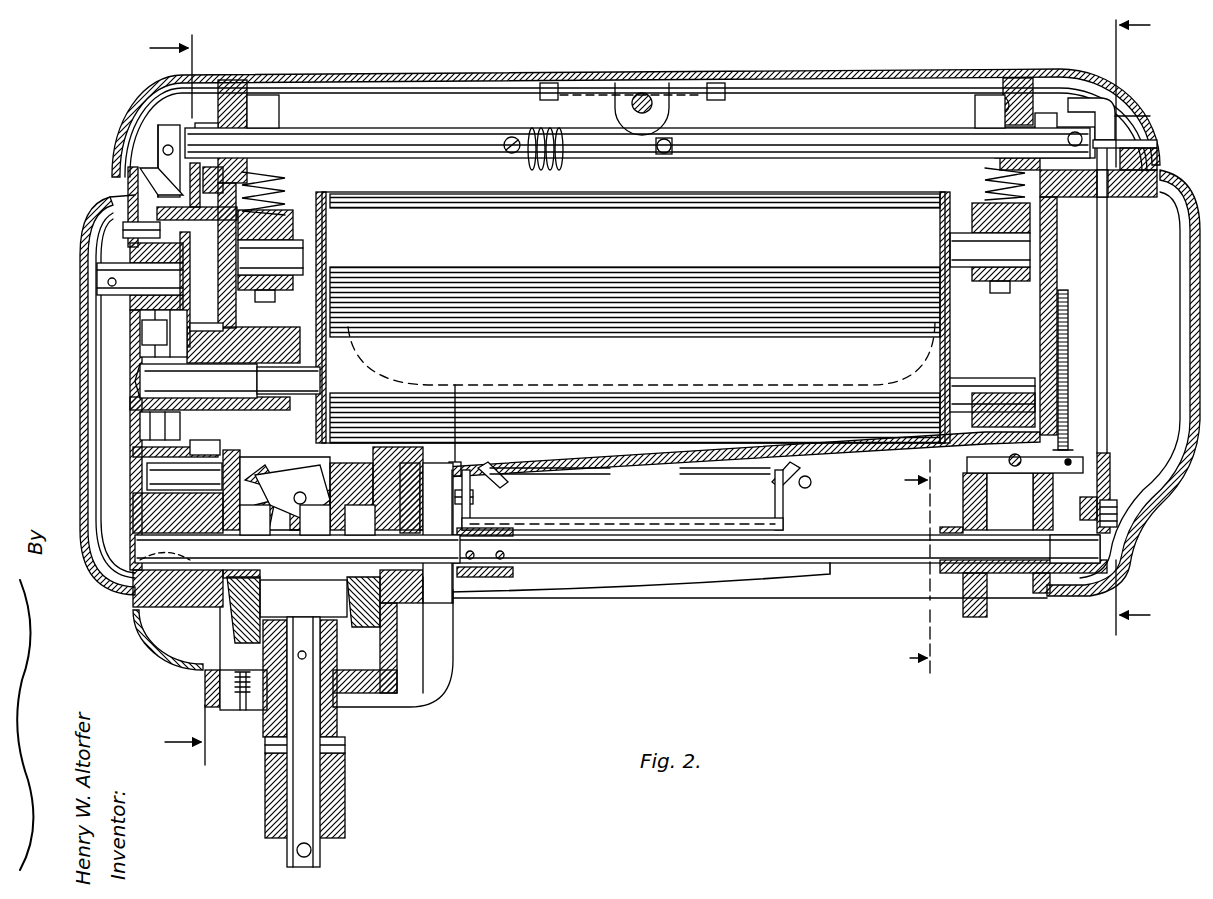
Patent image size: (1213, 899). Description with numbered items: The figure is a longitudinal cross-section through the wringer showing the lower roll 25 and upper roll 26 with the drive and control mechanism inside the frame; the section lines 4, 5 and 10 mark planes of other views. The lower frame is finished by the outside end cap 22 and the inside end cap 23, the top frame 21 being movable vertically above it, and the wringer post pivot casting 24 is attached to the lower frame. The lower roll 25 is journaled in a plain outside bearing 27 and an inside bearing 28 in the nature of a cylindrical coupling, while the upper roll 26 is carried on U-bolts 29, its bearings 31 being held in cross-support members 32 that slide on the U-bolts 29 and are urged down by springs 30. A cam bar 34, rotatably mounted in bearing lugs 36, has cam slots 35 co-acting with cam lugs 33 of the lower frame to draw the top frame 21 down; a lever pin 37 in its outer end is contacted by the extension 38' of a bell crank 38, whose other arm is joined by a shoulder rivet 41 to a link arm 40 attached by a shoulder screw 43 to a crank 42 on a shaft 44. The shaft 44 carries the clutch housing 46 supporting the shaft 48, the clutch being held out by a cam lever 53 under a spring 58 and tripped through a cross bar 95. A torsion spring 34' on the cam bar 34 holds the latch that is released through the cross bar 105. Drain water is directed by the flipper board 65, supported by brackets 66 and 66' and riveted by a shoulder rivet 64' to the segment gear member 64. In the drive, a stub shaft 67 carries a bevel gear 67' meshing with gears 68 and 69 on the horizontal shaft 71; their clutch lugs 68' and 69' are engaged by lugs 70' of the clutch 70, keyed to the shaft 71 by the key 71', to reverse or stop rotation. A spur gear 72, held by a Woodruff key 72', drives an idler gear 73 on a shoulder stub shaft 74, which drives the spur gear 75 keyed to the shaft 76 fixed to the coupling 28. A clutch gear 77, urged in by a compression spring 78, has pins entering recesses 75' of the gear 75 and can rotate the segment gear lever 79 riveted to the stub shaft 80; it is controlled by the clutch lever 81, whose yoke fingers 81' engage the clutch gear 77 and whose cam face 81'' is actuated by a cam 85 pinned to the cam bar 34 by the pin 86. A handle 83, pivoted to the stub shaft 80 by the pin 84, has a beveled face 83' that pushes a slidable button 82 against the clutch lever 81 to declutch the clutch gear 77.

The section line 4- 4 is at (1140, 324).
The section line 5- 5 is at (907, 567).
The section line 10- 10 is at (388, 728).
The top frame 21 is at (1132, 106).
The outside end cap 22 is at (1123, 383).
The inside end cap 23 is at (185, 670).
The wringer post pivot casting 24 is at (345, 778).
The lower roll 25 is at (644, 372).
The upper roll 26 is at (644, 249).
The outside bearing 27 is at (985, 400).
The inside bearing 28 is at (245, 390).
The U-bolts 29 is at (280, 128).
The springs 30 is at (288, 182).
The bearings 31 is at (303, 240).
The cross-support members 32 is at (295, 225).
The cam lugs 33 is at (207, 123).
The cam bar 34 is at (637, 128).
The torsion spring 34' is at (527, 135).
The cam slots 35 is at (195, 135).
The bearing lugs 36 is at (268, 102).
The lever pin 37 is at (1075, 130).
The bell crank member 38 is at (1159, 108).
The inwardly projecting extension 38' is at (1114, 96).
The link arm 40 is at (1108, 250).
The shoulder rivet 41 is at (1158, 144).
The crank member 42 is at (1085, 500).
The shoulder screw 43 is at (1110, 498).
The shaft 44 is at (1100, 545).
The clutch housing 46 is at (1023, 545).
The shaft 48 is at (870, 552).
The cam lever 53 is at (1010, 501).
The spring 58 is at (1075, 345).
The companion segment gear member 64 is at (720, 446).
The shoulder rivet 64' is at (489, 503).
The flipper board 65 is at (630, 518).
The bracket 66 is at (505, 465).
The companion bracket 66' is at (780, 465).
The stub shaft 67 is at (334, 742).
The bevel gear 67' is at (283, 721).
The mating gear 68 is at (243, 676).
The clutch lugs 68' is at (256, 533).
The mating gear 69 is at (385, 648).
The clutch lugs 69' is at (372, 533).
The clutch 70 is at (303, 610).
The lugs 70' is at (323, 533).
The horizontal shaft 71 is at (391, 577).
The key 71' is at (292, 492).
The spur gear 72 is at (176, 657).
The Woodruff key 72' is at (297, 549).
The idler gear 73 is at (215, 452).
The shoulder stub shaft 74 is at (165, 475).
The spur gear 75 is at (178, 321).
The recesses 75' is at (226, 325).
The shaft 76 is at (160, 380).
The clutch gear 77 is at (190, 448).
The compression spring 78 is at (140, 425).
The segment gear lever 79 is at (198, 289).
The stub-shaft 80 is at (82, 320).
The clutch lever 81 is at (149, 191).
The yoke fingers 81' is at (133, 329).
The cam face 81'' is at (115, 169).
The slidable button 82 is at (125, 238).
The handle 83 is at (83, 396).
The beveled face 83' is at (85, 208).
The pin 84 is at (108, 282).
The cam 85 is at (158, 128).
The pin 86 is at (163, 150).
The cross bar 95 is at (1080, 455).
The cross bar 105 is at (645, 95).